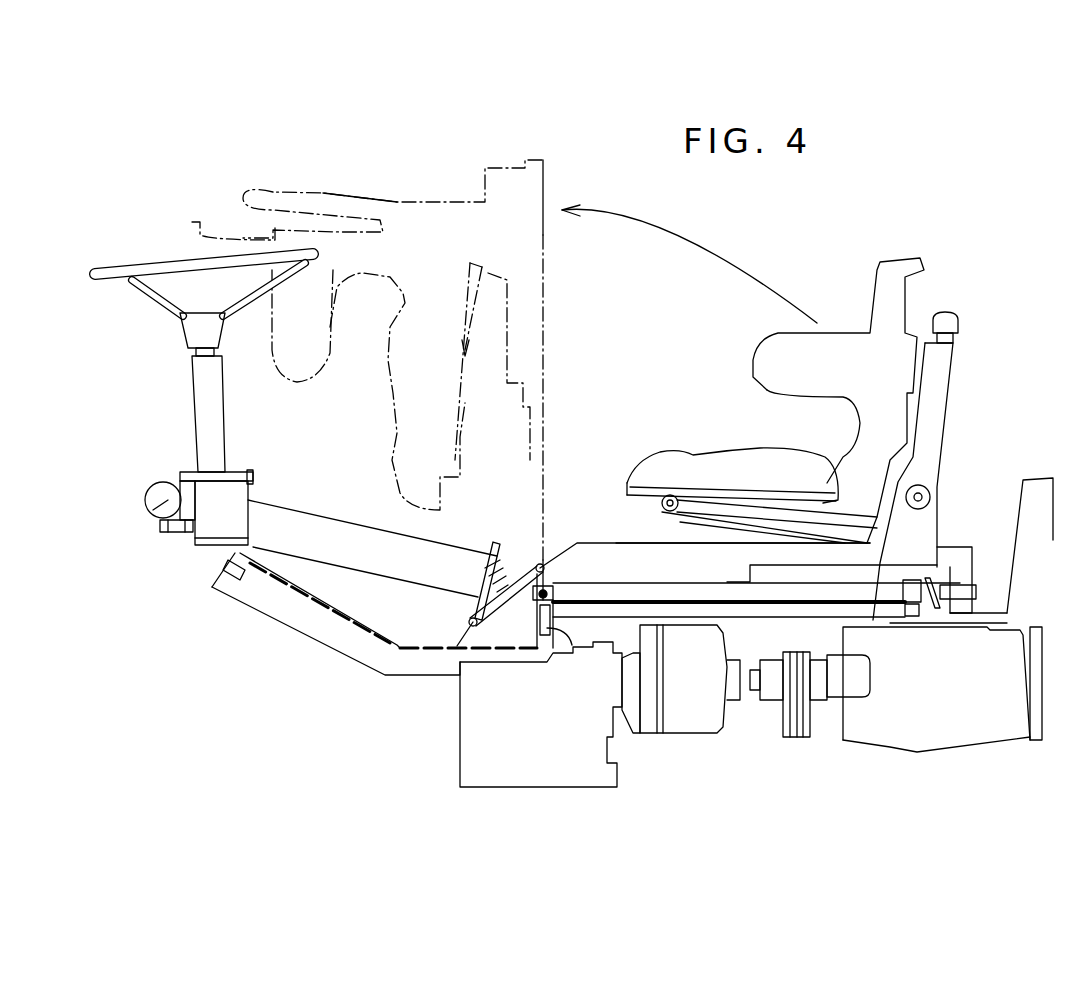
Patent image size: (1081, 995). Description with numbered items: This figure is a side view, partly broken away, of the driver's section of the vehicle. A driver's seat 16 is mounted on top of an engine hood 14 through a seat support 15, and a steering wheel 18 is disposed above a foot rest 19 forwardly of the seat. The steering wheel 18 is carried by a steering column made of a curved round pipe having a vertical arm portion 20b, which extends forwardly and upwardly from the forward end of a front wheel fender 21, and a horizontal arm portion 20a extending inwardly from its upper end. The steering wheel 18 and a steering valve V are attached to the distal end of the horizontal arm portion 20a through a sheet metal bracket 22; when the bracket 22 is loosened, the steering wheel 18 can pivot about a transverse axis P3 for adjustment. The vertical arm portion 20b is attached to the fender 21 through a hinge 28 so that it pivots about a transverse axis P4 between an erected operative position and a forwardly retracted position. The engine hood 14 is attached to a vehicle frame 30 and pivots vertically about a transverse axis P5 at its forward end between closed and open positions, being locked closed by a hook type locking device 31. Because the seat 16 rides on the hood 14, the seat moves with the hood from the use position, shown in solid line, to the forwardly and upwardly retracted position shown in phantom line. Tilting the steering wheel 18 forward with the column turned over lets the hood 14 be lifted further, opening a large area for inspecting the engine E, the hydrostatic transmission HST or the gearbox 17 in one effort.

The steering wheel 18 is at (150, 262).
The bracket 22 is at (246, 472).
The steering valve V is at (213, 530).
The horizontal arm portion 20a is at (158, 483).
The axis P3 is at (150, 520).
The vertical arm portion 20b is at (322, 512).
The foot rest 19 is at (327, 610).
The hinge 28 is at (493, 548).
The axis P4 is at (467, 622).
The axis P5 is at (540, 566).
The engine hood 14 is at (603, 583).
The front wheel fender 21 is at (616, 543).
The driver's seat 16 is at (715, 450).
The seat support 15 is at (937, 420).
The hook type locking device 31 is at (945, 605).
The gearbox 17 is at (470, 750).
The vehicle frame 30 is at (573, 645).
The hydrostatic transmission HST is at (707, 733).
The engine E is at (892, 747).